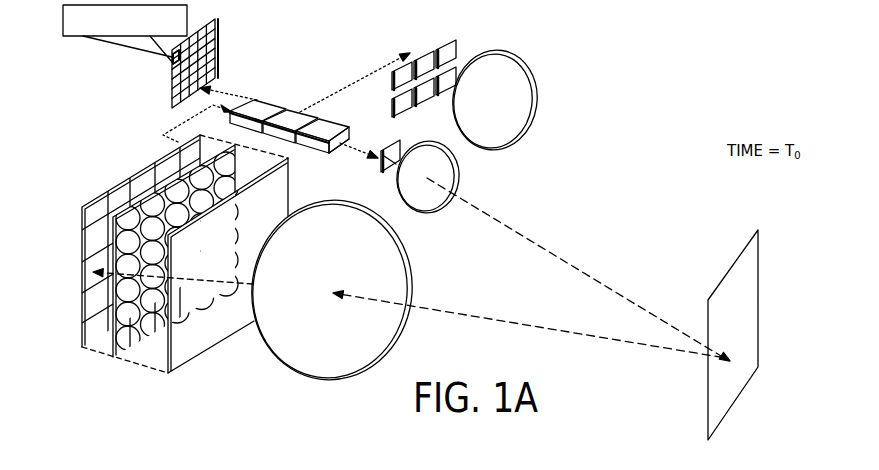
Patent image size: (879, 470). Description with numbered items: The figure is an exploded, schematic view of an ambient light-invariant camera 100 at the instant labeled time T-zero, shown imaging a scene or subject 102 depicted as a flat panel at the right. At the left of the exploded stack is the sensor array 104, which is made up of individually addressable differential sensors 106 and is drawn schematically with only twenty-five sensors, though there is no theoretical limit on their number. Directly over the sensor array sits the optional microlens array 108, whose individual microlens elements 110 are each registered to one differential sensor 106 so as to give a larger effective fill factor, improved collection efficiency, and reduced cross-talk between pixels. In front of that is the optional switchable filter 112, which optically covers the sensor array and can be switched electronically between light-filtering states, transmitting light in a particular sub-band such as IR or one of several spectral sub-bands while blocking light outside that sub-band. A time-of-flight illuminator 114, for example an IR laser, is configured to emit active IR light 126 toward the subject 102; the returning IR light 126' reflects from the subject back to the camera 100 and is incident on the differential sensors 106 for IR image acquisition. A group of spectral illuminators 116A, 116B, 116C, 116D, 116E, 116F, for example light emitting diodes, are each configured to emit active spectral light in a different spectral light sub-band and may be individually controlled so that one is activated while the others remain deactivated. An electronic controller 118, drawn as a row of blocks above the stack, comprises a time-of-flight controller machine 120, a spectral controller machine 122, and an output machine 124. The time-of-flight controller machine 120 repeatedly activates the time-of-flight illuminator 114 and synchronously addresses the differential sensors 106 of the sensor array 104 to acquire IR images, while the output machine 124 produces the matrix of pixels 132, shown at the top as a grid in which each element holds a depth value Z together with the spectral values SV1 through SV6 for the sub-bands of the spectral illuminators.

The camera 100 is at (606, 58).
The subject 102 is at (755, 230).
The sensor array 104 is at (98, 200).
The differential sensor 106 is at (92, 246).
The microlens array 108 is at (128, 360).
The microlens element 110 is at (124, 312).
The switchable filter 112 is at (176, 376).
The time-of-flight illuminator 114 is at (394, 161).
The spectral illuminator 116A is at (392, 72).
The spectral illuminator 116B is at (406, 50).
The spectral illuminator 116C is at (446, 38).
The spectral illuminator 116D is at (405, 113).
The spectral illuminator 116E is at (432, 104).
The spectral illuminator 116F is at (457, 62).
The electronic controller 118 is at (336, 160).
The time-of-flight controller machine 120 is at (338, 130).
The spectral controller machine 122 is at (292, 110).
The output machine 124 is at (260, 106).
The active IR light 126 is at (561, 249).
The reflected IR light 126' is at (480, 290).
The matrix of pixels 132 is at (215, 45).